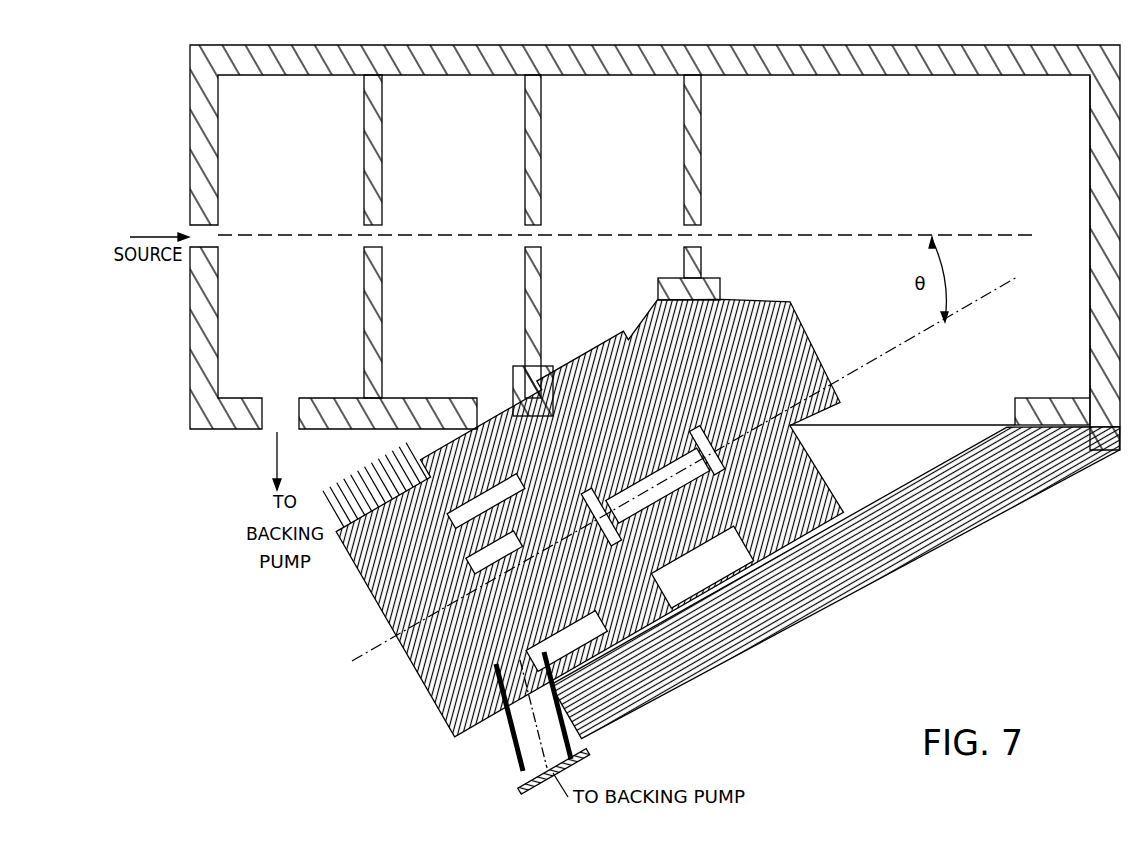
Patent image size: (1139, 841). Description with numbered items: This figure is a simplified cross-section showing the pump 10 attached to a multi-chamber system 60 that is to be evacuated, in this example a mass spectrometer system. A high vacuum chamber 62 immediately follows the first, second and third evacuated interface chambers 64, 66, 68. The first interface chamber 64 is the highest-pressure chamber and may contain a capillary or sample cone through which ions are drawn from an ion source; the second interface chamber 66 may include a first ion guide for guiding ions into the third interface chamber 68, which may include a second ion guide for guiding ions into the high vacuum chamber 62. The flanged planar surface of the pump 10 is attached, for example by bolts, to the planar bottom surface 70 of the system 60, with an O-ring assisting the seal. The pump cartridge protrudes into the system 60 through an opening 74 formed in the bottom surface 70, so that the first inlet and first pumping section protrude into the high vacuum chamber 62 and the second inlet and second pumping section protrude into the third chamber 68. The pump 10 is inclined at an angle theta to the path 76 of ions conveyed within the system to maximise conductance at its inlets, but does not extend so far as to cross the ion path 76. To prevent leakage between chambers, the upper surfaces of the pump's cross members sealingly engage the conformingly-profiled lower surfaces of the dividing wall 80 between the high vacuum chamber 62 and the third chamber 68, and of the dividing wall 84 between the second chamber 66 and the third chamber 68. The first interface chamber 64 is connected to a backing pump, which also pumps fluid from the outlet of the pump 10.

The pump 10 is at (752, 654).
The multi-chamber system 60 is at (880, 44).
The high vacuum chamber 62 is at (877, 169).
The first interface chamber 64 is at (277, 167).
The second interface chamber 66 is at (440, 167).
The third interface chamber 68 is at (602, 169).
The bottom surface 70 is at (1077, 452).
The opening 74 is at (932, 424).
The ion path 76 is at (805, 232).
The dividing wall 80 is at (702, 262).
The dividing wall 84 is at (541, 312).